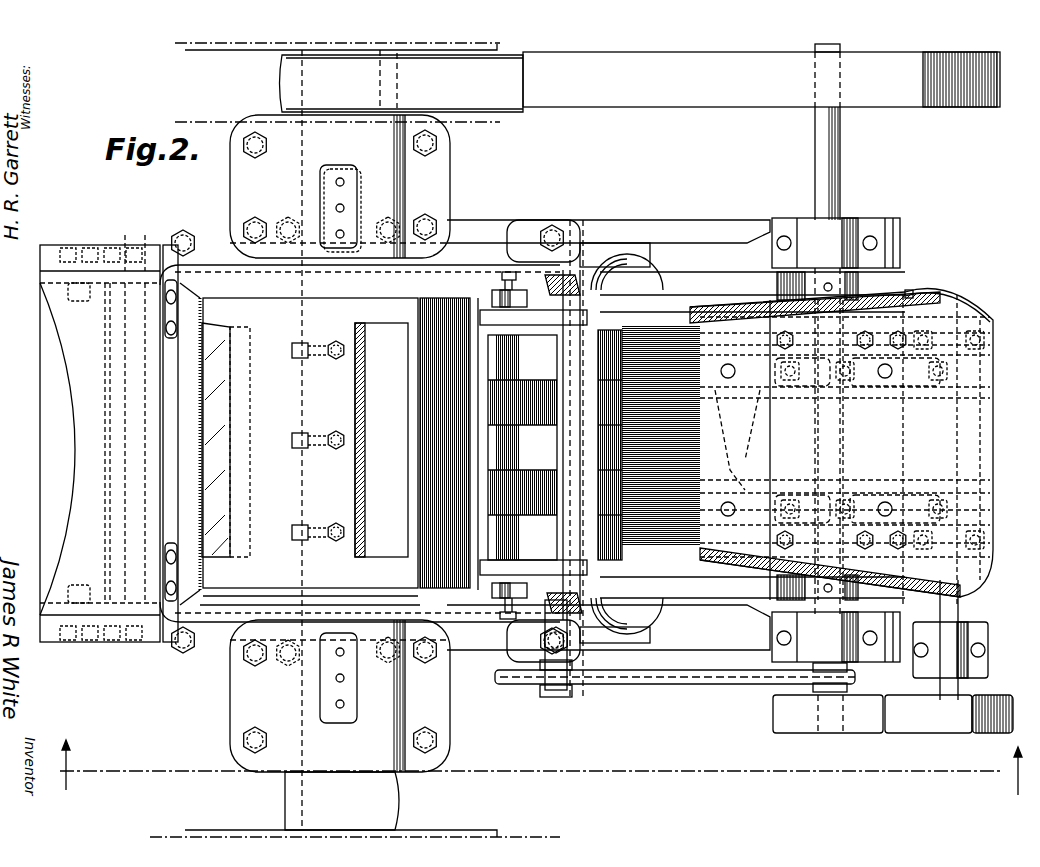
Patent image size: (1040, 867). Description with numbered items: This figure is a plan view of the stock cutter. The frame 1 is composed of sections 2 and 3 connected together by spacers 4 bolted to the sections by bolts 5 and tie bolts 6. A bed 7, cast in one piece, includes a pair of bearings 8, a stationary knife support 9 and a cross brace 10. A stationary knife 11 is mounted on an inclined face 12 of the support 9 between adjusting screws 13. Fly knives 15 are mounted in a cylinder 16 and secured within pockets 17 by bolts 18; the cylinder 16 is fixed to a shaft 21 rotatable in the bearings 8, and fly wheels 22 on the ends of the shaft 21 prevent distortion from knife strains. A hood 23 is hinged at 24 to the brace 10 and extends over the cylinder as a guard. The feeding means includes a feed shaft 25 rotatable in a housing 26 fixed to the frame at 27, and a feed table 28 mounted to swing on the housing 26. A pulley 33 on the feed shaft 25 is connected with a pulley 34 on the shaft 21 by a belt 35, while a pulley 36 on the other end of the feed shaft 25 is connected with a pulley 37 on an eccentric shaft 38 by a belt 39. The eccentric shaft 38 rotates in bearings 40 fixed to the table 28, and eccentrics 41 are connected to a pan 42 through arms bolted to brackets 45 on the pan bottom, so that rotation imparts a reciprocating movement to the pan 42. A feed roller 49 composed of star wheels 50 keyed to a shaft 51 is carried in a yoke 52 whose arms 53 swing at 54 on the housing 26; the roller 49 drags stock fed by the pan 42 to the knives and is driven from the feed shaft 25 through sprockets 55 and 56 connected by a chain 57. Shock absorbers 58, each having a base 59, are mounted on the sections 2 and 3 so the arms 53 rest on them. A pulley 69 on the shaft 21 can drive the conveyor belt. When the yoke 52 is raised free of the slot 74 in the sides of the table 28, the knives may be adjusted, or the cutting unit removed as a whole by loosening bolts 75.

The frame 1 is at (32, 358).
The section 2 is at (162, 632).
The section 3 is at (712, 195).
The spacer 4 is at (85, 495).
The bolt 5 is at (82, 250).
The tie bolt 6 is at (115, 560).
The bed 7 is at (225, 632).
The bearing 8 is at (240, 185).
The stationary knife support 9 is at (490, 280).
The cross brace 10 is at (165, 390).
The stationary knife 11 is at (490, 585).
The inclined face 12 is at (500, 605).
The adjusting screw 13 is at (502, 270).
The fly knife 15 is at (228, 420).
The cylinder 16 is at (258, 500).
The pocket 17 is at (385, 398).
The bolt 18 is at (295, 350).
The shaft 21 is at (300, 588).
The fly wheel 22 is at (242, 50).
The hood 23 is at (190, 373).
The hinge 24 is at (165, 270).
The feed shaft 25 is at (836, 165).
The housing 26 is at (834, 436).
The fixing point 27 is at (805, 225).
The feed table 28 is at (720, 510).
The pulley 33 is at (735, 107).
The pulley 34 is at (397, 93).
The belt 35 is at (565, 97).
The pulley 36 is at (800, 733).
The pulley 37 is at (978, 733).
The eccentric shaft 38 is at (958, 688).
The belt 39 is at (905, 733).
The bearing 40 is at (990, 345).
The eccentric 41 is at (882, 440).
The pan 42 is at (791, 444).
The bracket 45 is at (737, 440).
The feed roller 49 is at (625, 478).
The star wheel 50 is at (612, 440).
The shaft 51 is at (550, 697).
The yoke 52 is at (548, 615).
The arm 53 is at (752, 438).
The pivot 54 is at (812, 275).
The sprocket 55 is at (575, 692).
The sprocket 56 is at (812, 688).
The chain 57 is at (670, 688).
The shock absorber 58 is at (650, 270).
The base 59 is at (612, 245).
The pulley 69 is at (400, 792).
The slot 74 is at (480, 310).
The bolt 75 is at (560, 232).